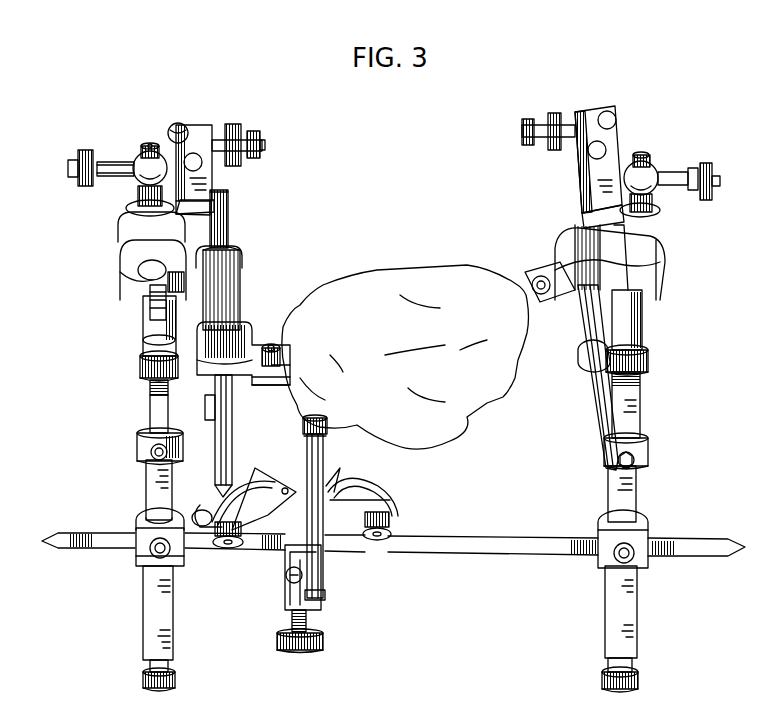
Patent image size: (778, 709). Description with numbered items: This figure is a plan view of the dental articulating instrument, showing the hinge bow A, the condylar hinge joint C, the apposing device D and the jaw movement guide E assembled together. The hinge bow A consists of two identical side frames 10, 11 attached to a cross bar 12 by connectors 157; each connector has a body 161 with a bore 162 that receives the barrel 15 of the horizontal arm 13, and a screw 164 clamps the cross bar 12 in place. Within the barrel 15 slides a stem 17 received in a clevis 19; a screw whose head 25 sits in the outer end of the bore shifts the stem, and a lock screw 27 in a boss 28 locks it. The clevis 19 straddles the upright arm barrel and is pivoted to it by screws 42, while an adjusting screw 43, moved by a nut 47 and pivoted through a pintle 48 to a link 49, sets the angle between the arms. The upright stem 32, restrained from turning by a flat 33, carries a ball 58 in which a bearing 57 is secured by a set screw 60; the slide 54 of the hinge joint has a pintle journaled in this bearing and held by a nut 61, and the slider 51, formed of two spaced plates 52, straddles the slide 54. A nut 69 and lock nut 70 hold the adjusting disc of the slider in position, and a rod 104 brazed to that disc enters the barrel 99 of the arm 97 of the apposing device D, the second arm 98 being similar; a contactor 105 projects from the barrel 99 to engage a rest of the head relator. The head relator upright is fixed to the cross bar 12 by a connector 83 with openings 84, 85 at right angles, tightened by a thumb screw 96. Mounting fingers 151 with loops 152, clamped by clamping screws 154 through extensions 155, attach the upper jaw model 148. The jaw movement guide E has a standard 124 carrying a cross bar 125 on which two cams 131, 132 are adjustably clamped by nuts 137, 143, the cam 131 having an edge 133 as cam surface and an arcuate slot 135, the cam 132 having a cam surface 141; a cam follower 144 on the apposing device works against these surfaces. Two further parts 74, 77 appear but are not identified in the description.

The side frame 10 is at (150, 405).
The side frame 11 is at (645, 479).
The cross bar 12 is at (531, 548).
The horizontal arm 13 is at (150, 462).
The barrel 15 is at (146, 598).
The stem 17 is at (160, 413).
The clevis 19 is at (150, 332).
The head 25 is at (143, 678).
The lock screw 27 is at (170, 456).
The boss 28 is at (138, 448).
The stem 32 is at (138, 196).
The flat 33 is at (134, 208).
The screws 42 is at (118, 240).
The adjusting screw 43 is at (152, 305).
The nut 47 is at (140, 362).
The pintle 48 is at (138, 286).
The link 49 is at (135, 270).
The slider 51 is at (200, 186).
The spaced plates 52 is at (213, 135).
The slide 54 is at (212, 208).
The bearing 57 is at (117, 158).
The ball 58 is at (140, 172).
The set screw 60 is at (149, 140).
The nut 61 is at (84, 148).
The nut 69 is at (240, 125).
The lock nut 70 is at (265, 144).
The hole 74 is at (194, 158).
The knob 77 is at (173, 126).
The connector 83 is at (320, 615).
The opening 84 is at (285, 556).
The opening 85 is at (287, 580).
The thumb screw 96 is at (295, 650).
The arm 97 is at (233, 444).
The arm 98 is at (598, 395).
The barrel 99 is at (226, 298).
The rod 104 is at (228, 218).
The contactor 105 is at (220, 418).
The standard 124 is at (298, 585).
The cross bar 125 is at (323, 548).
The cam 131 is at (228, 497).
The cam 132 is at (360, 488).
The edge 133 is at (273, 494).
The arcuate slot 135 is at (250, 498).
The nut 137 is at (226, 548).
The cam surface 141 is at (334, 484).
The nut 143 is at (391, 534).
The cam follower 144 is at (325, 588).
The upper jaw model 148 is at (440, 275).
The mounting fingers 151 is at (260, 386).
The loops 152 is at (232, 332).
The clamping screws 154 is at (273, 344).
The extensions 155 is at (276, 365).
The connectors 157 is at (140, 526).
The body 161 is at (136, 555).
The bore 162 is at (150, 506).
The screw 164 is at (168, 562).
The hinge bow A is at (140, 568).
The condylar hinge joint C is at (216, 203).
The apposing device D is at (582, 368).
The jaw movement guide E is at (350, 508).